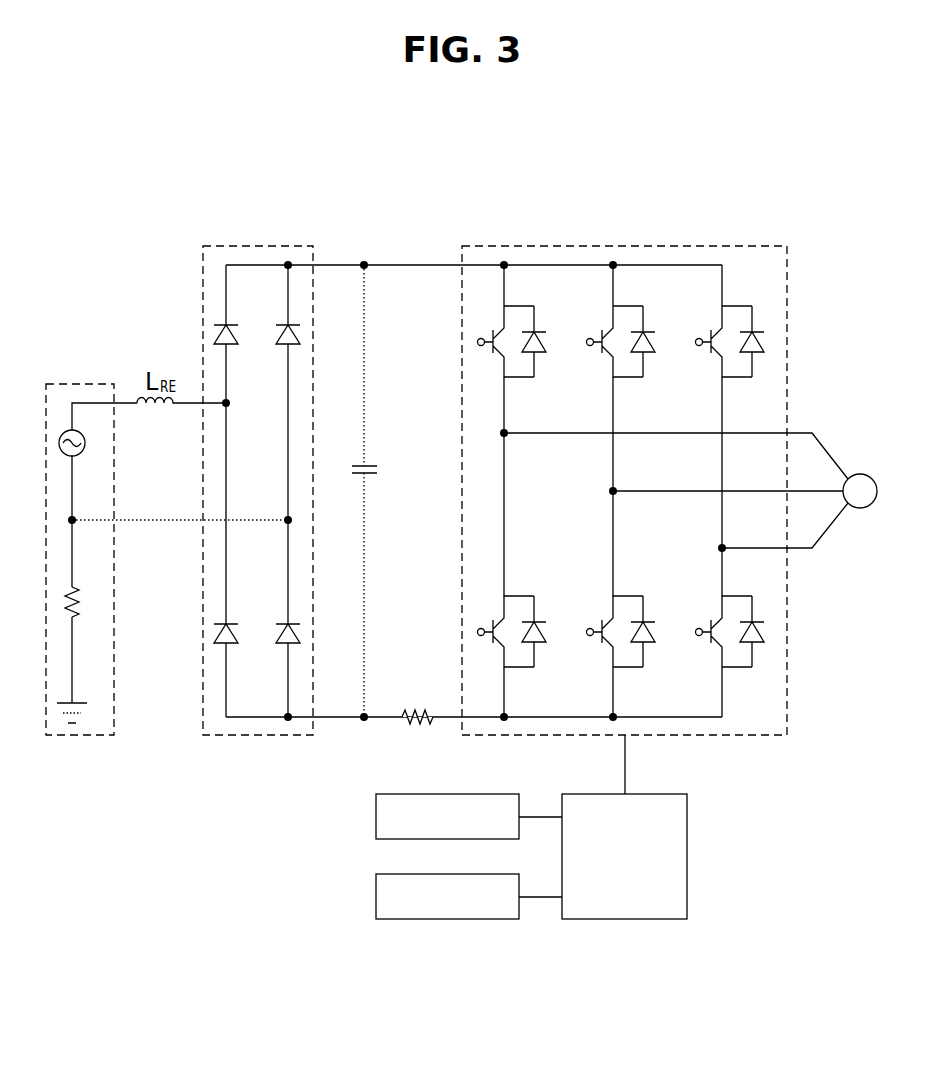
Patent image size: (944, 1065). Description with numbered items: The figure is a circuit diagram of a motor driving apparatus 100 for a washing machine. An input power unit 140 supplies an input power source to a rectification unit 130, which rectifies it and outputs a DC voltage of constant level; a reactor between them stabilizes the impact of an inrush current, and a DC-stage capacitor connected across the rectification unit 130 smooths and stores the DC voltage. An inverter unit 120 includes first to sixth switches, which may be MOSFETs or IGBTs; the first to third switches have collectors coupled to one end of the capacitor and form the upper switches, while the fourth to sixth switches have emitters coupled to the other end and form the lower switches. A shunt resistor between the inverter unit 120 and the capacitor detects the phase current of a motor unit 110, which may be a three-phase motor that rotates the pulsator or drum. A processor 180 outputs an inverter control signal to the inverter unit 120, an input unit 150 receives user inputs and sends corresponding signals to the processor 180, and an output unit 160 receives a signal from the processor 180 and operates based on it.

The motor driving apparatus 100 is at (763, 164).
The motor unit 110 is at (858, 473).
The inverter unit 120 is at (619, 246).
The rectification unit 130 is at (255, 246).
The input power unit 140 is at (78, 384).
The input unit 150 is at (376, 817).
The output unit 160 is at (376, 897).
The processor 180 is at (687, 857).